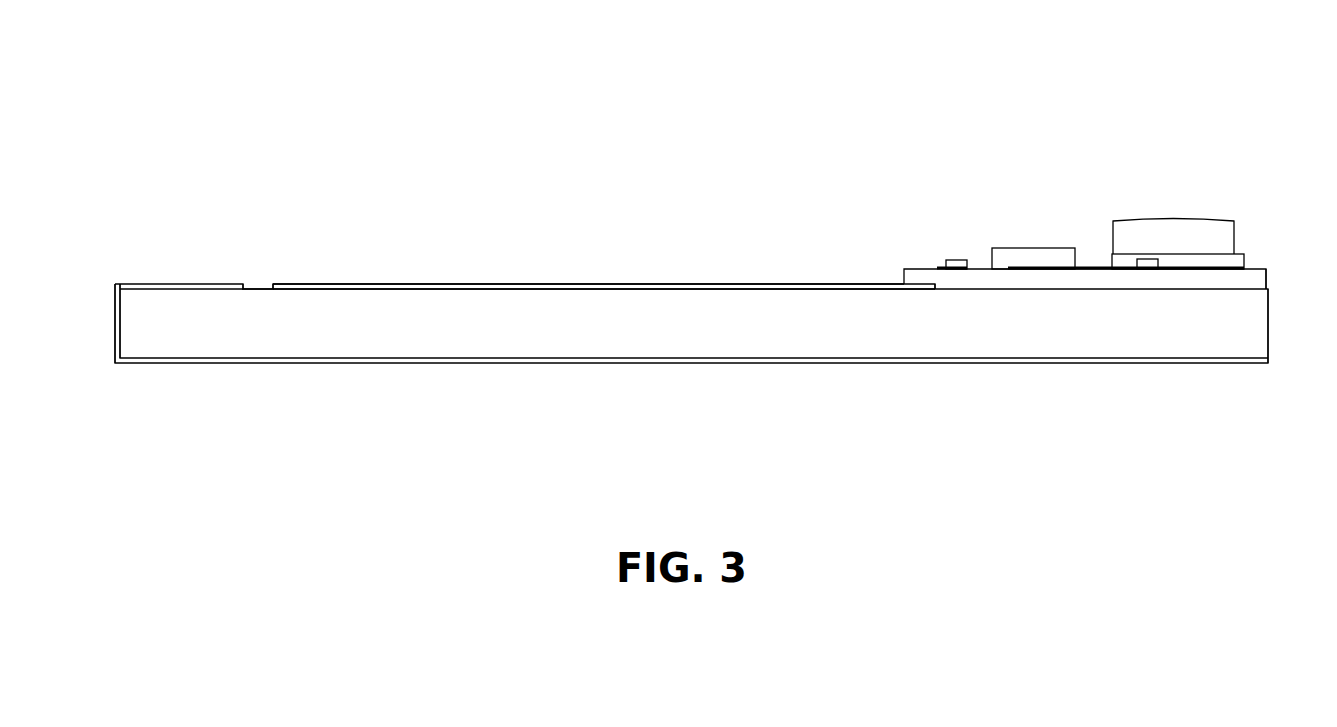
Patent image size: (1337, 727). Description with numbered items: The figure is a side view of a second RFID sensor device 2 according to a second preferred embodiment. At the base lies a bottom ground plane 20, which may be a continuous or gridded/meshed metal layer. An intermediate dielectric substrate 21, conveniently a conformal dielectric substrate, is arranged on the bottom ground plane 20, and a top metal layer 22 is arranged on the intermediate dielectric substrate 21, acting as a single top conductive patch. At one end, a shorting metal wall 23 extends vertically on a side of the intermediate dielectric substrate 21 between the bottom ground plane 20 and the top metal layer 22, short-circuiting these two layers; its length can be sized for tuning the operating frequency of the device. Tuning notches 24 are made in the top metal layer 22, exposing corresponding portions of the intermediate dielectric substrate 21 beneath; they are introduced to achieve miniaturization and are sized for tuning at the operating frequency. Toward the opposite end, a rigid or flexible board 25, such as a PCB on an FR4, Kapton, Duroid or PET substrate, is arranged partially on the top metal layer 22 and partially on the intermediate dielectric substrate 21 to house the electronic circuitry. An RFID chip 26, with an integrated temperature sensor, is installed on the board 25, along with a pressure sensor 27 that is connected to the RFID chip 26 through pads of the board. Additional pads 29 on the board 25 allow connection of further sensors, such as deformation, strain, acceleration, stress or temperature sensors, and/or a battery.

The second RFID sensor device 2 is at (155, 112).
The bottom ground plane 20 is at (661, 361).
The intermediate dielectric substrate 21 is at (1250, 326).
The top metal layer 22 is at (495, 286).
The shorting metal wall 23 is at (117, 340).
The tuning notches 24 is at (256, 284).
The rigid or flexible board 25 is at (1258, 280).
The RFID chip 26 is at (1013, 253).
The pressure sensor 27 is at (1228, 233).
The additional pads 29 is at (945, 263).